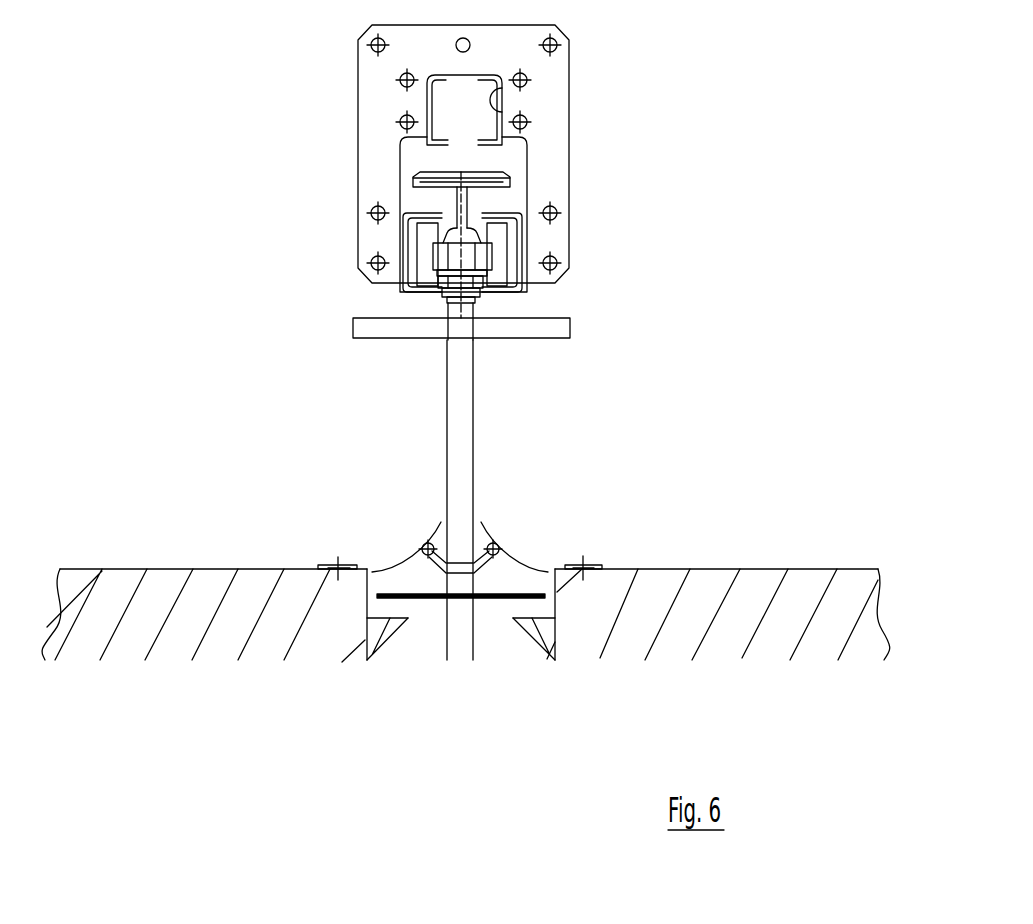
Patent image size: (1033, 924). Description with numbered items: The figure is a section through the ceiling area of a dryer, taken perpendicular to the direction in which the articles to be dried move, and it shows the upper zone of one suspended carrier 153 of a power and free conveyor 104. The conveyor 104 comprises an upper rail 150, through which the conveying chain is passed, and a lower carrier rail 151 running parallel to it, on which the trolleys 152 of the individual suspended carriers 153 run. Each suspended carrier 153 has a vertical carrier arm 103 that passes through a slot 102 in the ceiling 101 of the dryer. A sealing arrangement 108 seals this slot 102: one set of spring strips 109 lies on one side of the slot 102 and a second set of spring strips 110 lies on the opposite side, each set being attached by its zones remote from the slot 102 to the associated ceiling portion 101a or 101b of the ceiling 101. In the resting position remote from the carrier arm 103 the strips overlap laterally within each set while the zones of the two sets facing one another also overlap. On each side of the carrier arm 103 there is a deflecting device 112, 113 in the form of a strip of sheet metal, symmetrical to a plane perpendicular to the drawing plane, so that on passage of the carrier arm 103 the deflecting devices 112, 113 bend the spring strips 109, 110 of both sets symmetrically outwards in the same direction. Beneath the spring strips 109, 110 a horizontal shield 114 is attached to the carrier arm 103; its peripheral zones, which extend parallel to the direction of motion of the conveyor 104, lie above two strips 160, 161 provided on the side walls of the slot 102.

The ceiling 101 is at (160, 587).
The portion of the ceiling 101a is at (220, 569).
The portion of the ceiling 101b is at (727, 569).
The slot 102 is at (556, 592).
The carrier arm 103 is at (457, 435).
The power and free conveyor 104 is at (326, 156).
The sealing arrangement 108 is at (414, 541).
The spring strips 109 is at (426, 521).
The spring strips 110 is at (492, 513).
The deflecting device 112 is at (422, 563).
The deflecting device 113 is at (497, 560).
The horizontal shield 114 is at (484, 600).
The upper rail 150 is at (503, 106).
The lower carrier rail 151 is at (520, 247).
The trolley 152 is at (425, 255).
The suspended carrier 153 is at (484, 412).
The strip 160 is at (381, 646).
The strip 161 is at (538, 637).